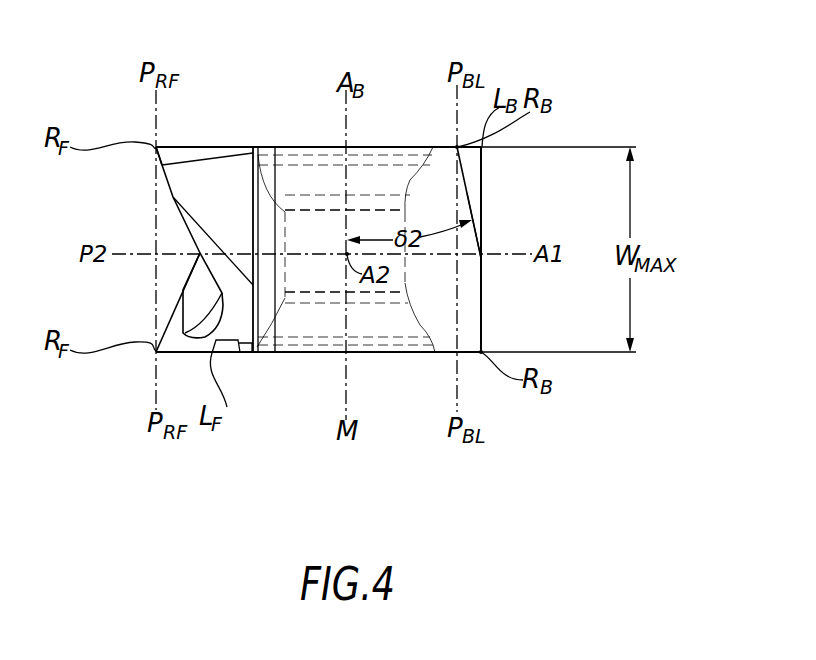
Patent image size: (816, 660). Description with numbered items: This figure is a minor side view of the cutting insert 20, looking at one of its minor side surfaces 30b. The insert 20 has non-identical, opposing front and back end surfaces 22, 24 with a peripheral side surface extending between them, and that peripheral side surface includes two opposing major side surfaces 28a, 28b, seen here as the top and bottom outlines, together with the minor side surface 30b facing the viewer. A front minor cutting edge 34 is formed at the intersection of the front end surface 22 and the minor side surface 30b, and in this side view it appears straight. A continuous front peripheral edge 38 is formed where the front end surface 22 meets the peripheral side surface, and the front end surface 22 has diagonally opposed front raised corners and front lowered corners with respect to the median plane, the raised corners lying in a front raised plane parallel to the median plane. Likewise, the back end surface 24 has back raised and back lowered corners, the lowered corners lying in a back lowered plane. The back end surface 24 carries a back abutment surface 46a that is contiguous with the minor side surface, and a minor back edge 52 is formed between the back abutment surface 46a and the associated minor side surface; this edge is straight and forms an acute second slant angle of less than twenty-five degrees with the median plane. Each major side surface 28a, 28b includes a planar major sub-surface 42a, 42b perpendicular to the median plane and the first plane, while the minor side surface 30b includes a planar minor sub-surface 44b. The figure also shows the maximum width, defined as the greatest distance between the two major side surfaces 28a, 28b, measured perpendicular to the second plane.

The cutting insert 20 is at (528, 51).
The front end surface 22 is at (192, 292).
The back end surface 24 is at (477, 173).
The major side surface 28a is at (286, 142).
The major side surface 28b is at (270, 360).
The minor side surface 30b is at (240, 203).
The front minor cutting edge 34 is at (167, 181).
The front peripheral edge 38 is at (168, 202).
The major sub-surface 42a is at (396, 147).
The major sub-surface 42b is at (417, 353).
The minor sub-surface 44b is at (455, 288).
The back abutment surface 46a is at (474, 193).
The minor back edge 52 is at (470, 223).